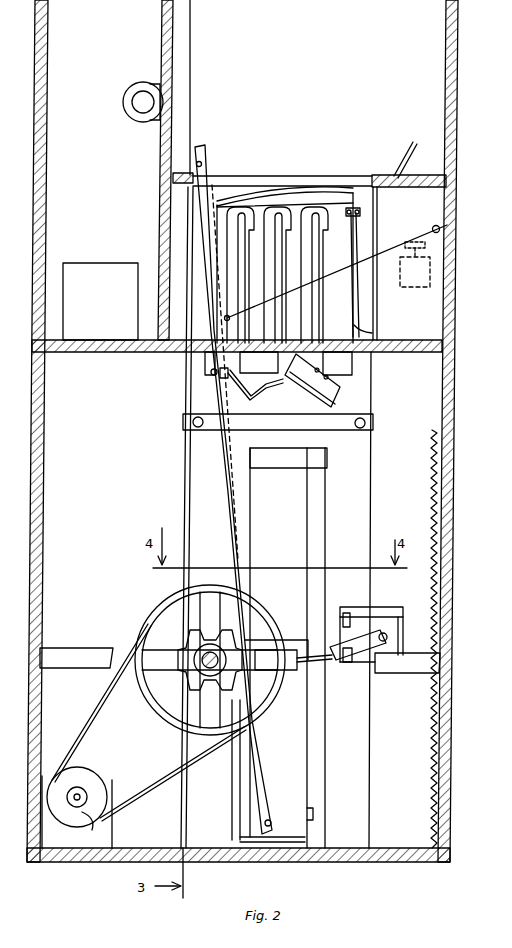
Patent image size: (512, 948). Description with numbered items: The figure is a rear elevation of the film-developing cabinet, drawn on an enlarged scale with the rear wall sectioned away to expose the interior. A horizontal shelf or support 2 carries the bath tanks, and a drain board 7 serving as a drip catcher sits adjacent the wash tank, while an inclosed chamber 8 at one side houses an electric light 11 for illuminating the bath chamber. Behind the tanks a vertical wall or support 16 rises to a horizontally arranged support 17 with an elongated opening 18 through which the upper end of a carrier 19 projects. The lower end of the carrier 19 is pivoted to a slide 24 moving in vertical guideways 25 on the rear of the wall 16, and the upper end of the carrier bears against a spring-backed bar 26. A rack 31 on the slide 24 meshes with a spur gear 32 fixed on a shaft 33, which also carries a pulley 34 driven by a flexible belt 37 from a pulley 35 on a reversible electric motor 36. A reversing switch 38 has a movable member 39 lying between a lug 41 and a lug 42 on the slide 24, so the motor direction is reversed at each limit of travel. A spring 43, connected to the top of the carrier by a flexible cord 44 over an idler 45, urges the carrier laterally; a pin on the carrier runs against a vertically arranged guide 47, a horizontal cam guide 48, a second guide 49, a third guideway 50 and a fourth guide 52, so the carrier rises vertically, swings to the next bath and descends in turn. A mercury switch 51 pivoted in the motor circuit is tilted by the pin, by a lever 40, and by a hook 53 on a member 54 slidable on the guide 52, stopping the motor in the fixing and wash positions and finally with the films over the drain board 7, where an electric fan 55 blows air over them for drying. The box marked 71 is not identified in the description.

The shelf or support 2 is at (108, 352).
The drain board 7 is at (414, 143).
The inclosed chamber 8 is at (44, 20).
The electric light 11 is at (134, 90).
The vertical wall or support 16 is at (220, 376).
The horizontally arranged support 17 is at (392, 178).
The elongated opening 18 is at (278, 178).
The carrier 19 is at (200, 146).
The slide 24 is at (292, 703).
The guideways 25 is at (312, 476).
The bar 26 is at (370, 423).
The rack 31 is at (240, 797).
The spur gear 32 is at (190, 648).
The shaft 33 is at (205, 666).
The pulley 34 is at (172, 726).
The pulley 35 is at (77, 812).
The electric motor 36 is at (96, 782).
The flexible belt 37 is at (95, 712).
The reversing switch 38 is at (412, 605).
The movable member 39 is at (355, 640).
The lever 40 is at (252, 403).
The lug 41 is at (298, 636).
The lug 42 is at (314, 815).
The spring 43 is at (431, 476).
The flexible cord 44 is at (388, 251).
The idler 45 is at (436, 225).
The vertically arranged guide 47 is at (232, 306).
The cam guide 48 is at (218, 192).
The second vertically arranged guide 49 is at (258, 270).
The third vertical guideway 50 is at (308, 246).
The mercury switch 51 is at (333, 389).
The fourth vertical guide 52 is at (350, 233).
The hook 53 is at (360, 211).
The member 54 is at (374, 331).
The electric fan 55 is at (408, 289).
The box 71 is at (97, 270).